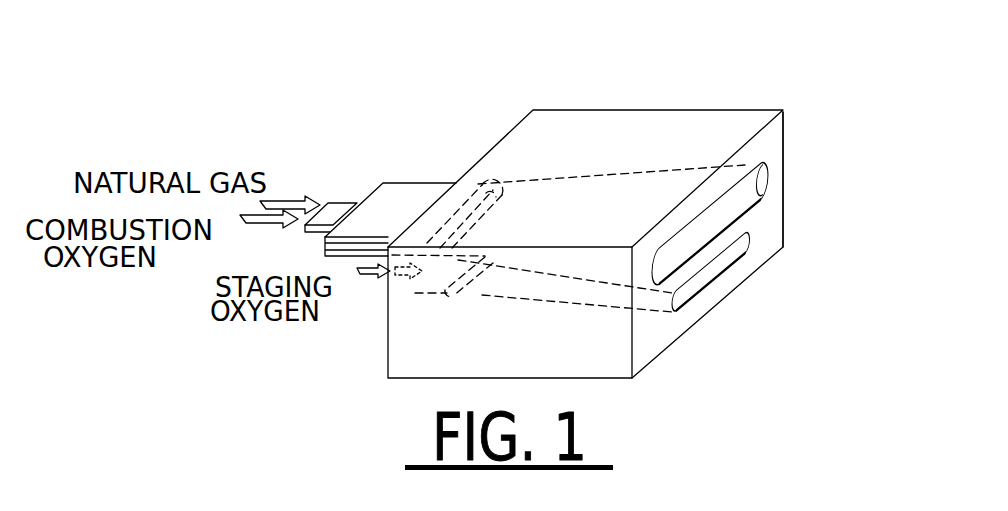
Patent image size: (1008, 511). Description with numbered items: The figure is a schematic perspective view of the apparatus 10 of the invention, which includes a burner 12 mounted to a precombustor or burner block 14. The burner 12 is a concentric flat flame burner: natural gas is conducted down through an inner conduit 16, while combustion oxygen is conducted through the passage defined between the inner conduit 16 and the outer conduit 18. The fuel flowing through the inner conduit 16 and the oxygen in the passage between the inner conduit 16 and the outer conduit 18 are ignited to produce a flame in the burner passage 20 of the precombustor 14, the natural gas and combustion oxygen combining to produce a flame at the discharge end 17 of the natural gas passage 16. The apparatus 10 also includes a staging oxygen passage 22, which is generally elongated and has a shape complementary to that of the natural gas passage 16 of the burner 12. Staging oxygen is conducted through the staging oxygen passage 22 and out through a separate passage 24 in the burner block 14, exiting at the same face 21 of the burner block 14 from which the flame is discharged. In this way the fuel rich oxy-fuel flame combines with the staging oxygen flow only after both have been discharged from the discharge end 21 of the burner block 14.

The apparatus 10 is at (644, 92).
The burner 12 is at (412, 176).
The precombustor or burner block 14 is at (478, 146).
The inner conduit 16 is at (350, 190).
The discharge end 17 is at (519, 198).
The outer conduit 18 is at (326, 239).
The burner passage 20 is at (762, 201).
The face 21 is at (784, 141).
The staging oxygen passage 22 is at (418, 290).
The passage 24 is at (720, 270).